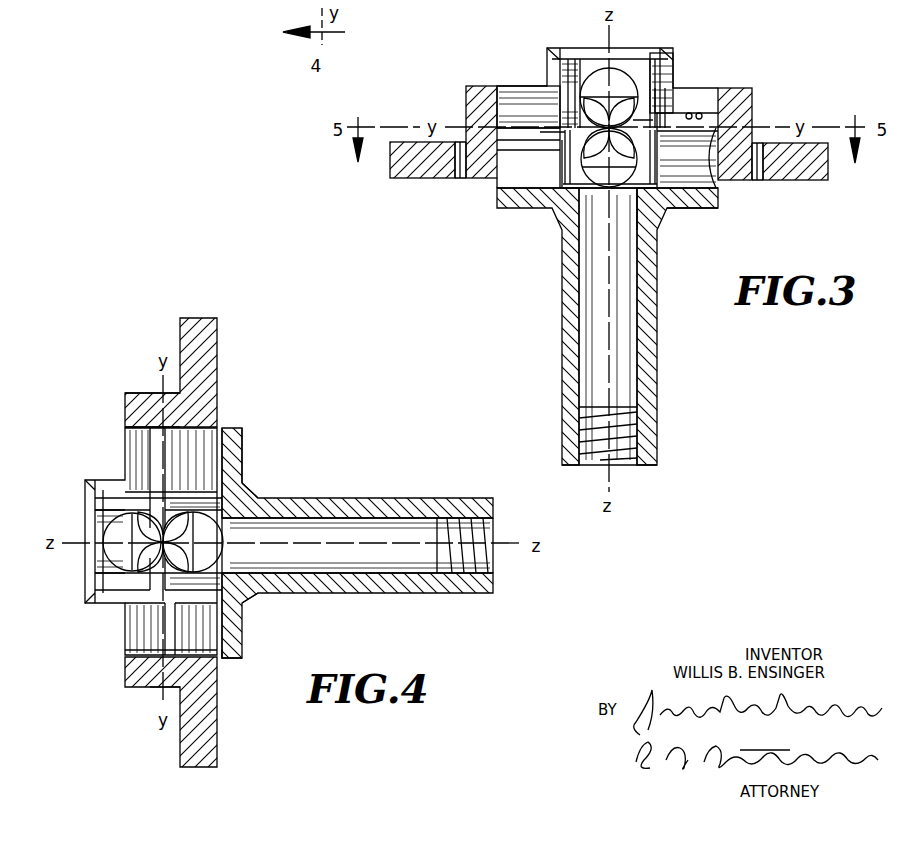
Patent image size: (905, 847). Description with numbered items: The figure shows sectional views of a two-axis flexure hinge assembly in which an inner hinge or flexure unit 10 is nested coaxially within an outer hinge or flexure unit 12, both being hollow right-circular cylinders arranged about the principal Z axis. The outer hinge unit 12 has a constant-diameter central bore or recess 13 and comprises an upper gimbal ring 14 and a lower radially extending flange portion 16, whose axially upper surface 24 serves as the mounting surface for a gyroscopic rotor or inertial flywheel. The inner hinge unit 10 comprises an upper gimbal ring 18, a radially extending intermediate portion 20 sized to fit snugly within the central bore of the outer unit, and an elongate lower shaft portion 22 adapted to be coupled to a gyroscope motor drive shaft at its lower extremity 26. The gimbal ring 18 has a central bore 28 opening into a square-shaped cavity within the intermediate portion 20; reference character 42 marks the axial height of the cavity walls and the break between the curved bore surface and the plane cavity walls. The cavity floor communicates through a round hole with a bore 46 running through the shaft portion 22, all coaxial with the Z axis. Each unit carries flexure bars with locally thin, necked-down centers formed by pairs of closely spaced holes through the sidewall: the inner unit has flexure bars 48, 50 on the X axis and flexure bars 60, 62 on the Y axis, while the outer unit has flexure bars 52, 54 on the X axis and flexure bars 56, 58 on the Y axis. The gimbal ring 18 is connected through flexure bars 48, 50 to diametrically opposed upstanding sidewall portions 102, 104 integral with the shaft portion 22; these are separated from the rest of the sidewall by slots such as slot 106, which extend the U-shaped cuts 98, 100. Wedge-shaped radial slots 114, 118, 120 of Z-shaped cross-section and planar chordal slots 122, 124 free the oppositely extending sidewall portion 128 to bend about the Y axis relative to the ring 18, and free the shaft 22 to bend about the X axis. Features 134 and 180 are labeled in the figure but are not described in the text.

In FIG. 3, the inner hinge or flexure unit 10 is at (530, 228).
In FIG. 4, the inner hinge or flexure unit 10 is at (276, 616).
In FIG. 3, the outer hinge or flexure unit 12 is at (464, 66).
In FIG. 4, the outer hinge or flexure unit 12 is at (92, 716).
In FIG. 4, the central bore or recess 13 is at (130, 650).
In FIG. 3, the upper gimbal ring 14 is at (618, 93).
In FIG. 4, the upper gimbal ring 14 is at (122, 527).
In FIG. 3, the lower radially extending flange portion 16 is at (828, 178).
In FIG. 4, the lower radially extending flange portion 16 is at (208, 318).
In FIG. 3, the upper gimbal ring 18 is at (670, 48).
In FIG. 4, the upper gimbal ring 18 is at (97, 480).
In FIG. 3, the radially extending intermediate portion 20 is at (718, 203).
In FIG. 4, the radially extending intermediate portion 20 is at (240, 428).
In FIG. 3, the elongate lower shaft portion 22 is at (658, 290).
In FIG. 4, the elongate lower shaft portion 22 is at (397, 500).
In FIG. 3, the axially upper surface 24 is at (410, 142).
In FIG. 4, the axially upper surface 24 is at (180, 745).
In FIG. 3, the threaded bore end 26 is at (627, 468).
In FIG. 4, the threaded bore end 26 is at (493, 568).
In FIG. 3, the central bore 28 is at (578, 60).
In FIG. 3, the axial height of cavity walls 42 is at (688, 113).
In FIG. 4, the axial height of cavity walls 42 is at (152, 458).
In FIG. 3, the bore 46 is at (580, 312).
In FIG. 4, the bore 46 is at (322, 518).
In FIG. 3, the flexure bar 48 is at (555, 125).
In FIG. 4, the flexure bar 48 is at (100, 570).
In FIG. 3, the flexure bar 50 is at (657, 147).
In FIG. 4, the flexure bar 50 is at (175, 462).
In FIG. 3, the flexure bar 52 is at (466, 127).
In FIG. 4, the flexure bar 52 is at (222, 525).
In FIG. 3, the flexure bar 54 is at (755, 128).
In FIG. 4, the flexure bar 54 is at (162, 392).
In FIG. 4, the flexure bar 56 is at (163, 692).
In FIG. 3, the flexure bar 58 is at (714, 156).
In FIG. 4, the flexure bar 60 is at (168, 636).
In FIG. 3, the flexure bar 62 is at (650, 115).
In FIG. 3, the U-shaped cut 98 is at (458, 178).
In FIG. 3, the U-shaped cut 100 is at (756, 148).
In FIG. 3, the upwardly extending sidewall portion 102 is at (507, 185).
In FIG. 4, the upwardly extending sidewall portion 102 is at (222, 553).
In FIG. 3, the upwardly extending sidewall portion 104 is at (718, 208).
In FIG. 4, the slot 106 is at (222, 482).
In FIG. 4, the wedge-shaped radial slot 114 is at (177, 612).
In FIG. 3, the wedge-shaped radial slot 118 is at (704, 112).
In FIG. 3, the wedge-shaped radial slot 120 is at (548, 150).
In FIG. 4, the wedge-shaped radial slot 120 is at (170, 498).
In FIG. 4, the planar chordal slot 122 is at (218, 647).
In FIG. 3, the planar chordal slot 124 is at (637, 212).
In FIG. 4, the planar chordal slot 124 is at (242, 450).
In FIG. 3, the sidewall portion 128 is at (580, 152).
In FIG. 3, the bore surface 134 is at (652, 158).
In FIG. 4, the fillet 180 is at (248, 597).